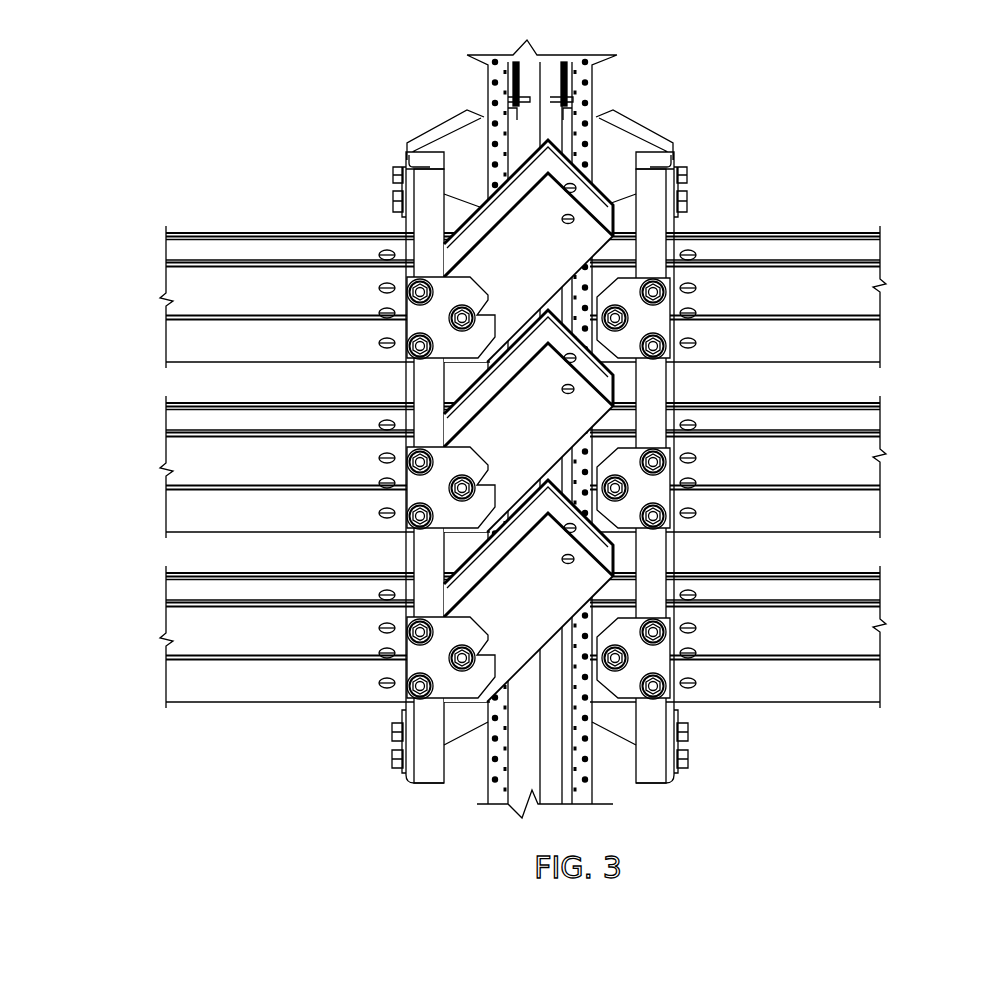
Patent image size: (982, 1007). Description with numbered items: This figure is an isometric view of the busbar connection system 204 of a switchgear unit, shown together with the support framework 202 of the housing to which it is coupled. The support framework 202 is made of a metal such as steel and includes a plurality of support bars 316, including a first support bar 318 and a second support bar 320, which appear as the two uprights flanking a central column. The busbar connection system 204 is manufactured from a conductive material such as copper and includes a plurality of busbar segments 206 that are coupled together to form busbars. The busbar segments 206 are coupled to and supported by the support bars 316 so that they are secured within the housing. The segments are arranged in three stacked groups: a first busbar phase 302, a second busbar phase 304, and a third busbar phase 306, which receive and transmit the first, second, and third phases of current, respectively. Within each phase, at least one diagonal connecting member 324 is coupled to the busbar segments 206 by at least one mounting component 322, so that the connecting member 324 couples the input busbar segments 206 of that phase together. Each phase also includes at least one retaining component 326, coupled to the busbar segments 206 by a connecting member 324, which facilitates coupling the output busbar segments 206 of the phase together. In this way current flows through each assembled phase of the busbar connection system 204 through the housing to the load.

The support framework 202 is at (557, 63).
The busbar connection system 204 is at (290, 131).
The busbar segments 206 is at (880, 688).
The first busbar phase 302 is at (84, 271).
The second busbar phase 304 is at (84, 441).
The third busbar phase 306 is at (84, 611).
The support bars 316 is at (695, 154).
The first support bar 318 is at (398, 151).
The second support bar 320 is at (678, 153).
The mounting components 322 is at (407, 702).
The connecting members 324 is at (600, 580).
The retaining components 326 is at (677, 693).